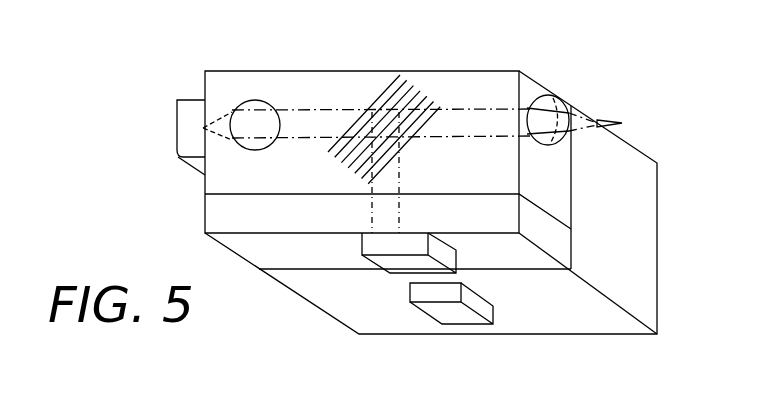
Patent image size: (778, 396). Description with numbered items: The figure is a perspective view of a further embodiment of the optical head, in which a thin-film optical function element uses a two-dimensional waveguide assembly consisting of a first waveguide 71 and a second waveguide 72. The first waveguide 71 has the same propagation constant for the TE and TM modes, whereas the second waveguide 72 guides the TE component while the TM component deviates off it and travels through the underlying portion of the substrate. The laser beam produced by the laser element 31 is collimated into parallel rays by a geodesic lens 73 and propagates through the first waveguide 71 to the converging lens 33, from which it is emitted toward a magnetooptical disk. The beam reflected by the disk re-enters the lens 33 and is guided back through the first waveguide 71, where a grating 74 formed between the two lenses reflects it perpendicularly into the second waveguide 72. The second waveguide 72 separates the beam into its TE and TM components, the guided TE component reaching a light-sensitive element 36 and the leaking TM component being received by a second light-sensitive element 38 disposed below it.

The laser element 31 is at (187, 148).
The converging lens 33 is at (545, 146).
The light-sensitive element 36 is at (397, 265).
The second light-sensitive element 38 is at (454, 317).
The first waveguide 71 is at (457, 85).
The second waveguide 72 is at (487, 213).
The geodesic lens 73 is at (250, 107).
The grating 74 is at (386, 90).